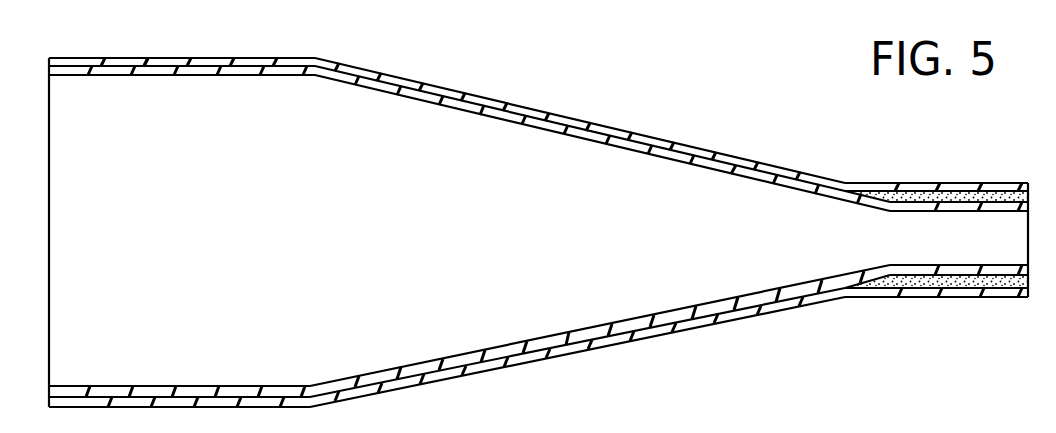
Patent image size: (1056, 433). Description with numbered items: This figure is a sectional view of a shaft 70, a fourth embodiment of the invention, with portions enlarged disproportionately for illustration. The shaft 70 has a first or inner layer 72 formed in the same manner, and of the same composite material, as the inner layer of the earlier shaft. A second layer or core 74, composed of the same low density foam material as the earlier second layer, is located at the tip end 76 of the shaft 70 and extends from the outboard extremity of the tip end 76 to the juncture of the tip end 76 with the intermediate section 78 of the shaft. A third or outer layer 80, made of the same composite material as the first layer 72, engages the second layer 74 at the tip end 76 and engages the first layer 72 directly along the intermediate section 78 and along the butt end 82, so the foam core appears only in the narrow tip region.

The shaft 70 is at (500, 80).
The first or inner layer 72 is at (268, 59).
The second layer or core 74 is at (898, 185).
The tip end 76 is at (976, 178).
The intermediate section 78 is at (614, 126).
The third or outer layer 80 is at (197, 63).
The butt end 82 is at (122, 56).